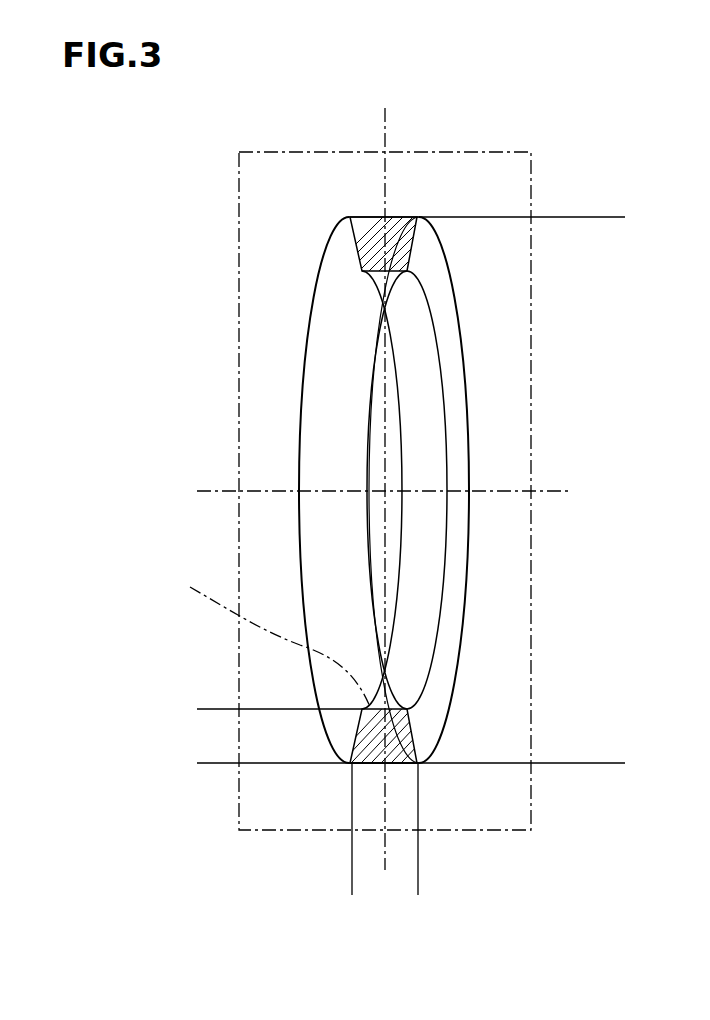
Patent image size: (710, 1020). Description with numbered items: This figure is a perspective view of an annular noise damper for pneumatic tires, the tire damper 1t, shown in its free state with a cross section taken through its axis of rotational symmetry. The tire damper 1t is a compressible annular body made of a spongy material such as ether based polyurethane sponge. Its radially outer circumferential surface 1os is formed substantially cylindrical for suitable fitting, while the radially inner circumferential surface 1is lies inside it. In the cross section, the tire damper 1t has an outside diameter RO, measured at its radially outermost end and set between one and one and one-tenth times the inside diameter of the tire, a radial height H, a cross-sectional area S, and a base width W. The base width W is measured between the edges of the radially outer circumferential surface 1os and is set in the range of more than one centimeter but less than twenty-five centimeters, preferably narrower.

The tire damper 1t is at (369, 436).
The radially outer circumferential surface 1os is at (403, 217).
The radially inner circumferential surface 1is is at (420, 305).
The cross-sectional area S is at (273, 638).
The radial height H is at (202, 709).
The base width W is at (405, 896).
The outside diameter RO is at (617, 217).